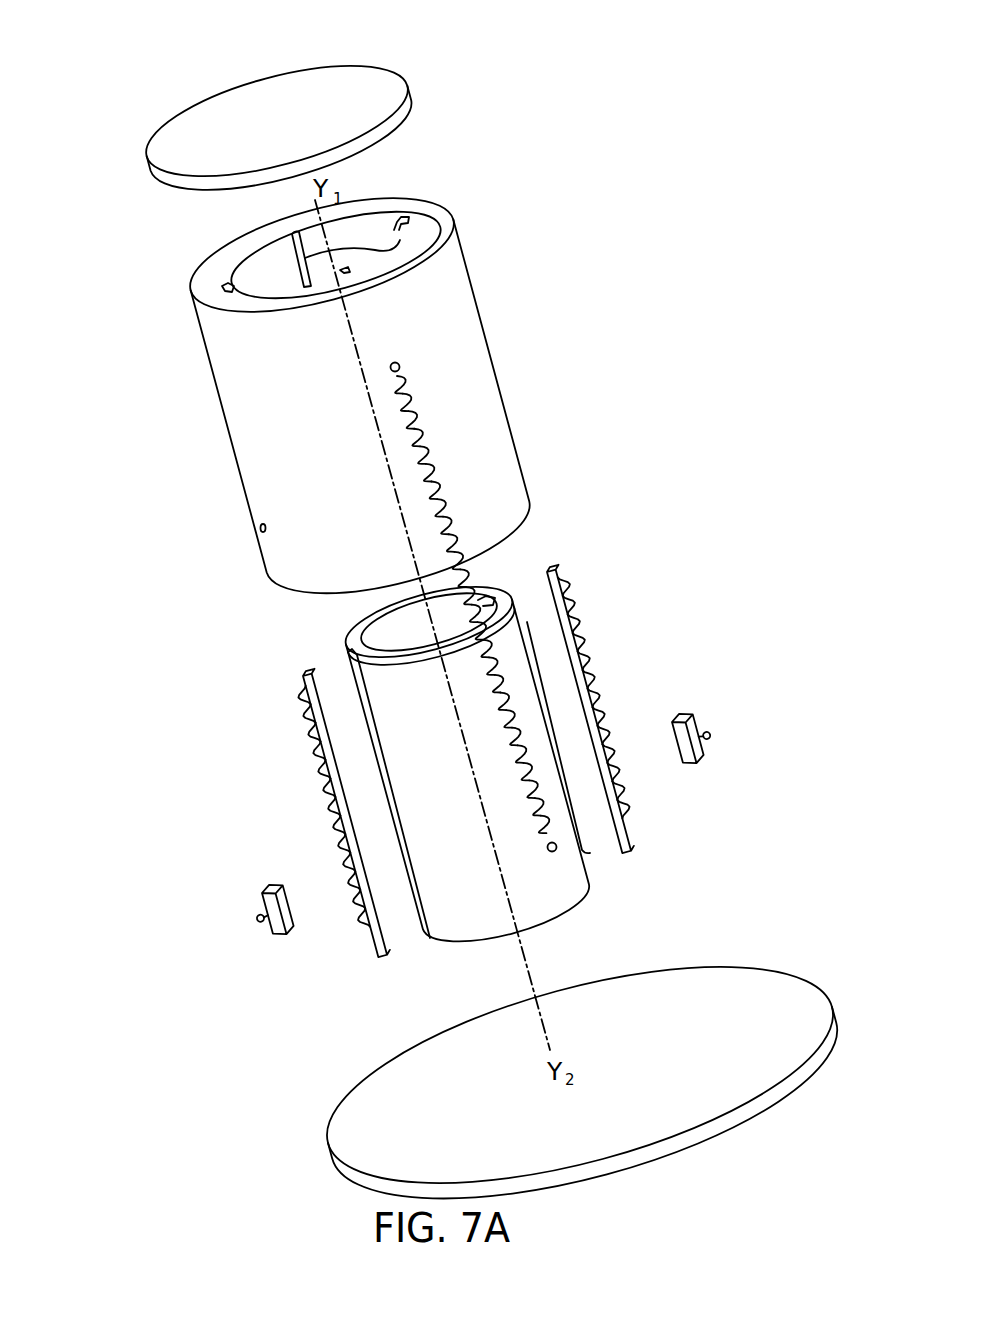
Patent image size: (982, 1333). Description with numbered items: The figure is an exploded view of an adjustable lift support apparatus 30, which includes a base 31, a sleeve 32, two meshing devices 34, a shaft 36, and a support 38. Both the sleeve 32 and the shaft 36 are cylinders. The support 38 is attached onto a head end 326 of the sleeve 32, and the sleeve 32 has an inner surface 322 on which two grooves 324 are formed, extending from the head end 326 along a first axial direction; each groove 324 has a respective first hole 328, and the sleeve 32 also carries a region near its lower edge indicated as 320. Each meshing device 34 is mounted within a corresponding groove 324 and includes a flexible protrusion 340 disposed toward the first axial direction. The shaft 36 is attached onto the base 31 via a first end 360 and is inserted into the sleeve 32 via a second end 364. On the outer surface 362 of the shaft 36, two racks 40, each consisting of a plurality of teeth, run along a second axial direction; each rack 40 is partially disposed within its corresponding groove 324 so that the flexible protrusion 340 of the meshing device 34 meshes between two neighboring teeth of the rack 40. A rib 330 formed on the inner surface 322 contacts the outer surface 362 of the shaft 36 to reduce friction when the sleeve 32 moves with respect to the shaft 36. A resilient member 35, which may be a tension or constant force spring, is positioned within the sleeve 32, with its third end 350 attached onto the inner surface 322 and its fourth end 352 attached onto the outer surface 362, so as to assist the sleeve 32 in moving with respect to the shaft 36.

The adjustable lift support apparatus 30 is at (462, 54).
The base 31 is at (328, 1138).
The sleeve 32 is at (342, 399).
The meshing device 34 is at (474, 793).
The resilient member 35 is at (500, 593).
The shaft 36 is at (472, 727).
The support 38 is at (247, 84).
The rack 40 is at (585, 645).
The housing bottom edge 320 is at (290, 592).
The inner surface 322 is at (293, 278).
The groove 324 is at (420, 218).
The head end 326 is at (248, 253).
The first hole 328 is at (260, 528).
The rib 330 is at (345, 262).
The flexible protrusion 340 is at (678, 748).
The third end 350 is at (400, 370).
The fourth end 352 is at (558, 843).
The first end 360 is at (597, 894).
The outer surface 362 is at (457, 798).
The second end 364 is at (383, 626).